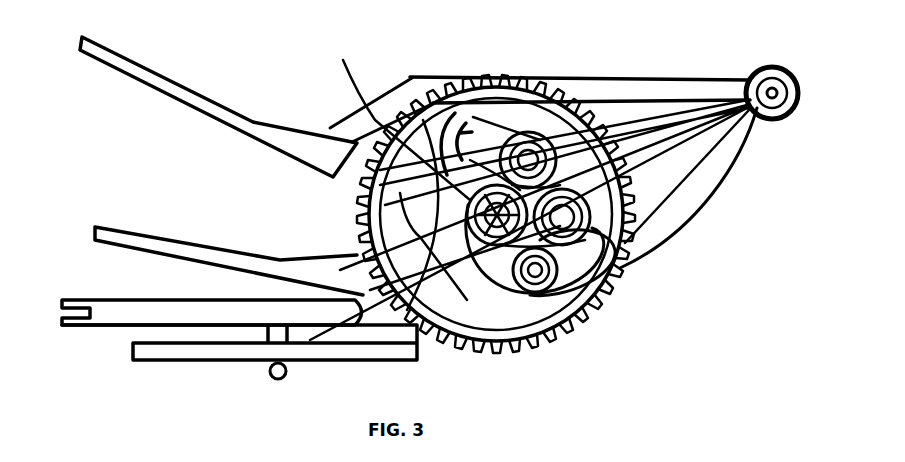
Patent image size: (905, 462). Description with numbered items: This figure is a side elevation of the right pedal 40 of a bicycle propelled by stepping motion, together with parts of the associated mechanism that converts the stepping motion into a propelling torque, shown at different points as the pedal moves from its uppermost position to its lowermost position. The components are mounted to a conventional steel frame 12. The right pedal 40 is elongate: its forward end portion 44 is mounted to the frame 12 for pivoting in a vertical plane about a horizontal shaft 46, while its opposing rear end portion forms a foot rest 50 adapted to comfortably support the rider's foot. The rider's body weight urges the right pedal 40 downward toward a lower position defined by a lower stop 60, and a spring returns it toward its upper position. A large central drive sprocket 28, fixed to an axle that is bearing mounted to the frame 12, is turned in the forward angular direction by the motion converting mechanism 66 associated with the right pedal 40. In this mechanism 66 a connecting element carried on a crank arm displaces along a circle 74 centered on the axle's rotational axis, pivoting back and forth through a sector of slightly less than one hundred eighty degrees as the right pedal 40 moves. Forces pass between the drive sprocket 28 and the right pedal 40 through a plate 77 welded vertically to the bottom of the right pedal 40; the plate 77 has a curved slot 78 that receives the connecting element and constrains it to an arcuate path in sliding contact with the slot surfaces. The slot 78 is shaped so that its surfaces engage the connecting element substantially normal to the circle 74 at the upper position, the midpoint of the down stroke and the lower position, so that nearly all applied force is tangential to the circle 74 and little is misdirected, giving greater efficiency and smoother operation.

The frame 12 is at (90, 306).
The drive sprocket 28 is at (578, 316).
The right pedal 40 is at (276, 84).
The forward end portion 44 is at (668, 76).
The horizontal shaft 46 is at (792, 108).
The foot rest 50 is at (152, 64).
The lower stop 60 is at (283, 378).
The motion converting mechanism 66 is at (637, 225).
The circle 74 is at (428, 137).
The plate 77 is at (502, 160).
The curved slot 78 is at (473, 117).